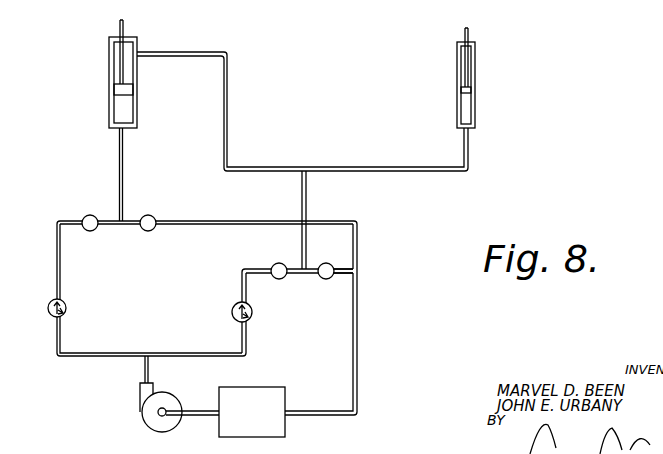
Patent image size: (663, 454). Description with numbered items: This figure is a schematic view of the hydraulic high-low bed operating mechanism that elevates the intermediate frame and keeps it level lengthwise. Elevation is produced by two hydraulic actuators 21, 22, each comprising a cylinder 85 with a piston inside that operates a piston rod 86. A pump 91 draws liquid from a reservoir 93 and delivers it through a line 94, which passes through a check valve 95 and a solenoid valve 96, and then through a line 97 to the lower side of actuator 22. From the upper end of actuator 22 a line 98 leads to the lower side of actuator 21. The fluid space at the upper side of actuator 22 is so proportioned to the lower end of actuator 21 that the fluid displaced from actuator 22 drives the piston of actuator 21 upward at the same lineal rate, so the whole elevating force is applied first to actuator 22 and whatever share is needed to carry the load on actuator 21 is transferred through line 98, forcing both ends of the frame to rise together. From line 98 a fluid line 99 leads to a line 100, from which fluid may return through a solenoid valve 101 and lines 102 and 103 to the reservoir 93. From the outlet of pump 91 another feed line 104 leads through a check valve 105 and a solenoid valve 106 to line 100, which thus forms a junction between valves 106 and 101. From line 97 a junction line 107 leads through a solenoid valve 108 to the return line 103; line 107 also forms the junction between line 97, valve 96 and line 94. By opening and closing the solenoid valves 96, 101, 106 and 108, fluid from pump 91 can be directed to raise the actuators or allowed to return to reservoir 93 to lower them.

The hydraulic actuator 21 is at (485, 100).
The hydraulic actuator 22 is at (103, 69).
The cylinder 85 is at (136, 105).
The piston rod 86 is at (119, 28).
The pump 91 is at (140, 412).
The reservoir 93 is at (252, 412).
The line 94 is at (57, 237).
The check valve 95 is at (48, 306).
The solenoid valve 96 is at (96, 207).
The line 97 is at (118, 161).
The line 98 is at (214, 52).
The fluid line 99 is at (307, 204).
The line 100 is at (312, 274).
The solenoid valve 101 is at (346, 256).
The line 102 is at (342, 278).
The return line 103 is at (357, 363).
The feed line 104 is at (203, 360).
The check valve 105 is at (233, 306).
The solenoid valve 106 is at (287, 256).
The junction line 107 is at (135, 227).
The solenoid valve 108 is at (167, 207).